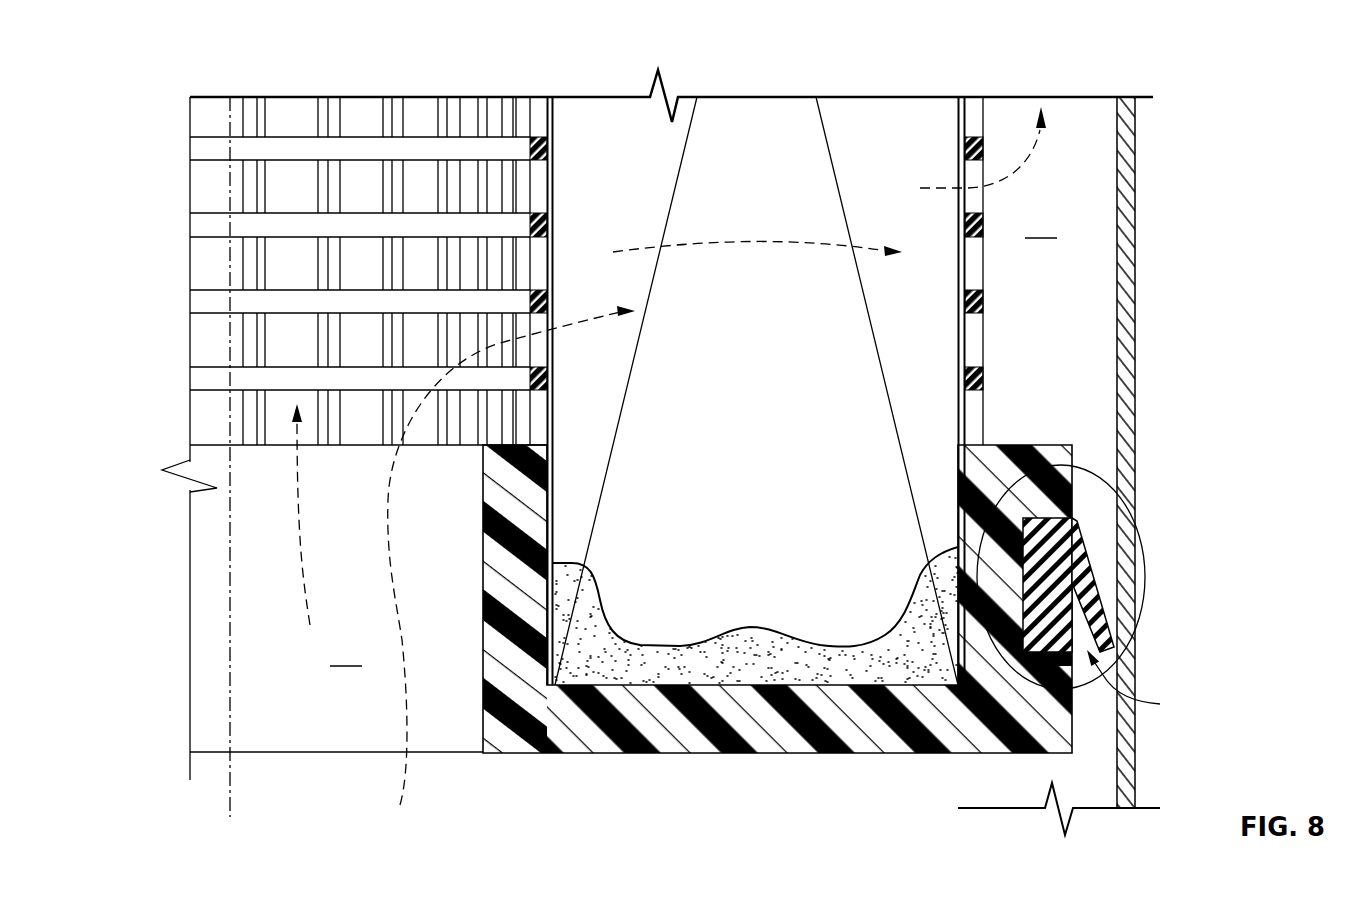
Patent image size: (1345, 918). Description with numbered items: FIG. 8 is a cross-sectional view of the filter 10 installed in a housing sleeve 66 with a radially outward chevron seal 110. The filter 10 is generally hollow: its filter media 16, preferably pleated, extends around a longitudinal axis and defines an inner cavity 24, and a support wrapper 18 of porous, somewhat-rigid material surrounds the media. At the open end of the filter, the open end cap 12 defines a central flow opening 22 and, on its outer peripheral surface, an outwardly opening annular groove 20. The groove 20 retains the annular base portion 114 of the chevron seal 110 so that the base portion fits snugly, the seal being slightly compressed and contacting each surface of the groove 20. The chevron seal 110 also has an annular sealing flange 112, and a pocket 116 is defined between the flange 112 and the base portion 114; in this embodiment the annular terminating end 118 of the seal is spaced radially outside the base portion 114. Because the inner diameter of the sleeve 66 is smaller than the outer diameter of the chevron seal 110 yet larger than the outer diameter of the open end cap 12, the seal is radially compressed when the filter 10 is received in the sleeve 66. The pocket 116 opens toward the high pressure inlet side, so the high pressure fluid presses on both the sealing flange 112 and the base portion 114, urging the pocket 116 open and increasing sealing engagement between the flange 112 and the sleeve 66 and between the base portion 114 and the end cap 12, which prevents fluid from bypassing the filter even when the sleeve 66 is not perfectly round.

The filter 10 is at (255, 80).
The open end cap 12 is at (657, 740).
The filter media 16 is at (600, 110).
The support wrapper 18 is at (398, 110).
The outwardly opening annular groove 20 is at (963, 550).
The central flow opening 22 is at (483, 702).
The inner cavity 24 is at (271, 742).
The sleeve 66 is at (1130, 226).
The chevron seal 110 is at (1074, 540).
The annular sealing flange 112 is at (1100, 587).
The annular base portion 114 is at (1032, 656).
The pocket 116 is at (1142, 683).
The annular terminating end 118 is at (1108, 657).